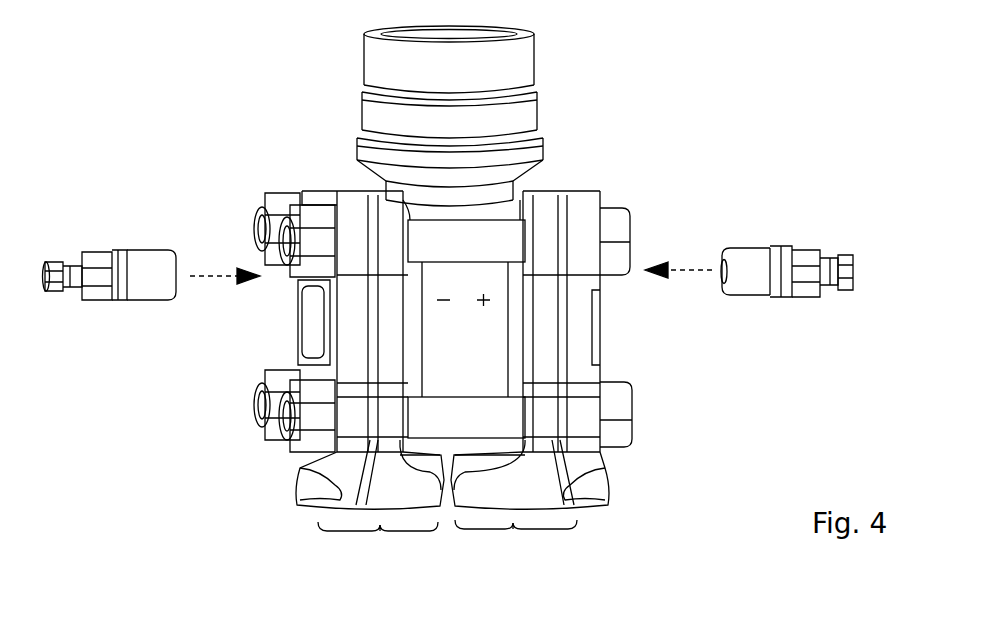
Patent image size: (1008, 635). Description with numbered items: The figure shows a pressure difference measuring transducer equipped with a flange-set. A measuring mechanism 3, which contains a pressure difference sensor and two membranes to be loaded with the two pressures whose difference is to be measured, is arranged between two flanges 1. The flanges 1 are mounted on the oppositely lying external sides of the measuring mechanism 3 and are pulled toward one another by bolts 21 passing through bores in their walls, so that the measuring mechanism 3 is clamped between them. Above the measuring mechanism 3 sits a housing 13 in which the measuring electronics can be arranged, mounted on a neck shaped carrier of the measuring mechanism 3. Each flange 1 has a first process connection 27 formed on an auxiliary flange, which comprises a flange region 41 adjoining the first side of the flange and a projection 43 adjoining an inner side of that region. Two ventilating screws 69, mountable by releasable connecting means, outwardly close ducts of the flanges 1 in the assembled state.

The flange 1 is at (453, 257).
The measuring mechanism 3 is at (455, 338).
The housing 13 is at (500, 82).
The bolt 21 is at (265, 192).
The first process connection 27 is at (338, 497).
The flange region 41 is at (447, 542).
The projection 43 is at (446, 544).
The ventilating screw 69 is at (115, 250).